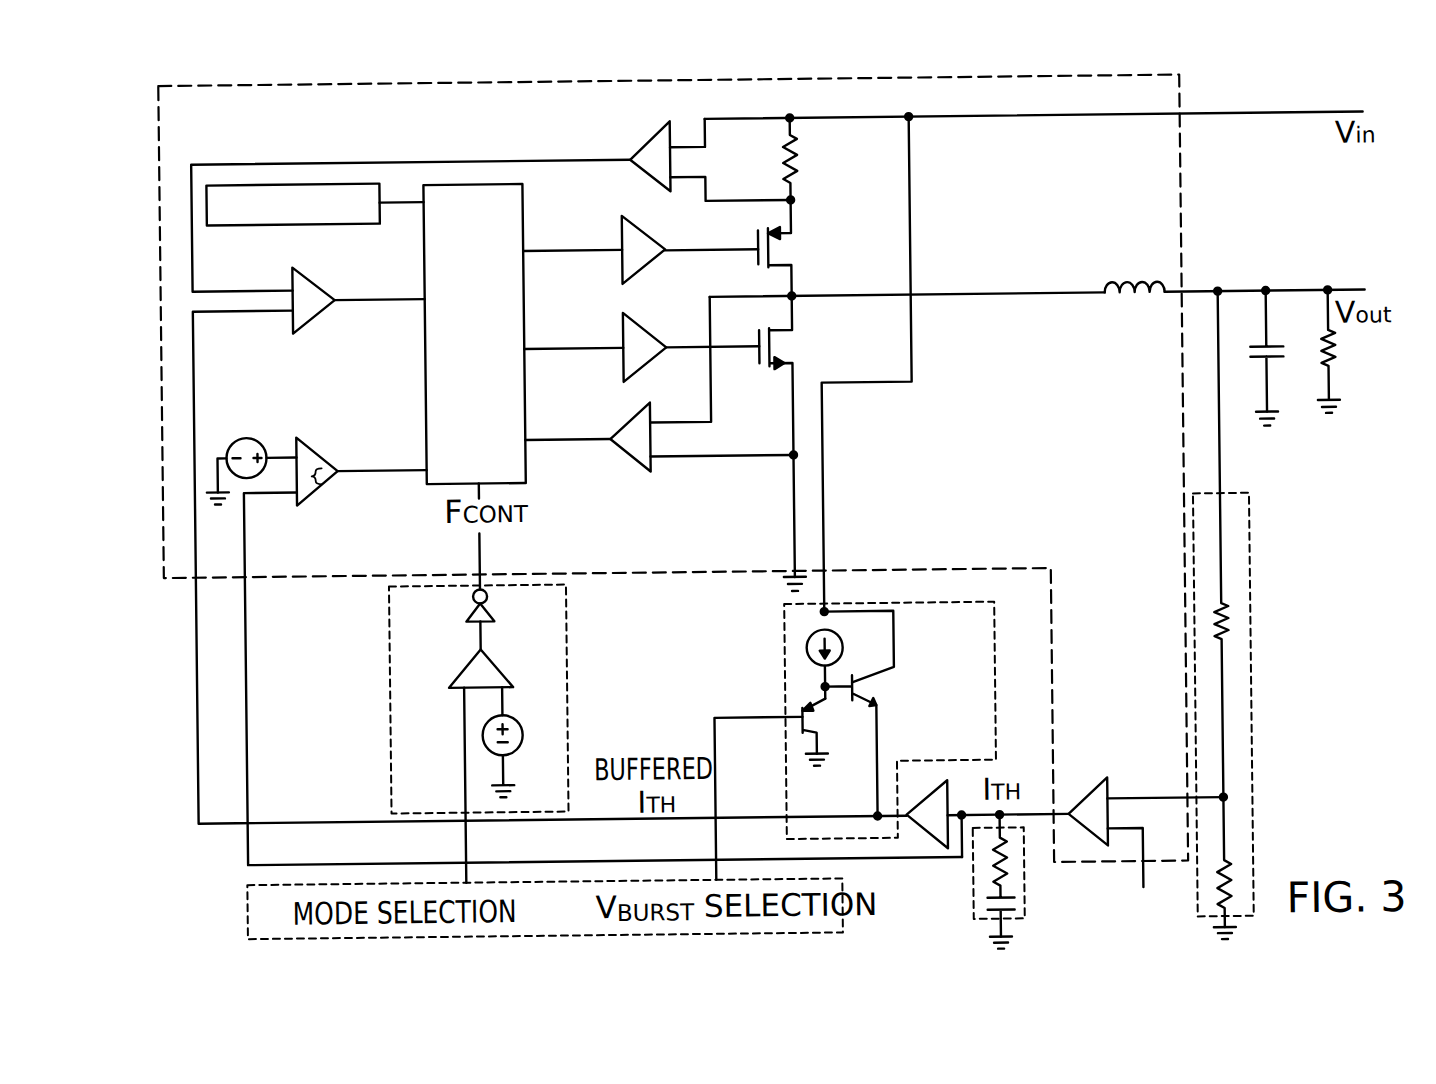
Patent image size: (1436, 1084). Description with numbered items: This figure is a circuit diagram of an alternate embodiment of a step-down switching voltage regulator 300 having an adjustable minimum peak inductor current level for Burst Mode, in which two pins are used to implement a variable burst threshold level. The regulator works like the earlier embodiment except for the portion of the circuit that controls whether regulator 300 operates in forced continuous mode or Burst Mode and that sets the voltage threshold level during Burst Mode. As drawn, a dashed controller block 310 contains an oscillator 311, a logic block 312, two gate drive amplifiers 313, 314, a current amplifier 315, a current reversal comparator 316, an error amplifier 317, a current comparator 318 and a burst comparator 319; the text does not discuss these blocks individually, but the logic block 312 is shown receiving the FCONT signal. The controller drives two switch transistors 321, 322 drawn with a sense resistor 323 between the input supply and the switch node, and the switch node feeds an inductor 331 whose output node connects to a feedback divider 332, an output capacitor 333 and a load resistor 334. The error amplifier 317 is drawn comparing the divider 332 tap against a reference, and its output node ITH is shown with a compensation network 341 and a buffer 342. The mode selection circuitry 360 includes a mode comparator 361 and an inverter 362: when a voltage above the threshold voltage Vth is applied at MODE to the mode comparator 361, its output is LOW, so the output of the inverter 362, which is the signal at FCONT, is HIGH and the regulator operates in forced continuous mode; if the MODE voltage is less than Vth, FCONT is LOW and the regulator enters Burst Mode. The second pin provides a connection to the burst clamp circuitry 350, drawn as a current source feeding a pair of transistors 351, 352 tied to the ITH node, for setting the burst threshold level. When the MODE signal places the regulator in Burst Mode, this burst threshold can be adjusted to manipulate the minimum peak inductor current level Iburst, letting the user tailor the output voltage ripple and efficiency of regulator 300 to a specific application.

The regulator 300 is at (1357, 791).
The controller integrated circuit 310 is at (1184, 220).
The oscillator 311 is at (270, 181).
The logic circuit 312 is at (456, 182).
The driver amplifier for switch 321 313 is at (643, 226).
The driver amplifier for switch 322 314 is at (628, 322).
The current amplifier 315 is at (644, 169).
The current reversal comparator 316 is at (628, 421).
The error amplifier 317 is at (1070, 823).
The current comparator 318 is at (339, 299).
The burst comparator 319 is at (319, 449).
The main switch transistor 321 is at (794, 249).
The synchronous switch transistor 322 is at (794, 349).
The current sense resistor 323 is at (804, 166).
The inductor 331 is at (1110, 276).
The feedback resistor divider 332 is at (1247, 626).
The output capacitor 333 is at (1272, 365).
The load resistor 334 is at (1334, 375).
The compensation network 341 is at (970, 905).
The buffer 342 is at (912, 826).
The burst clamp circuitry 350 is at (854, 692).
The transistor 351 is at (808, 715).
The transistor with current source 352 is at (850, 689).
The mode selection circuitry 360 is at (460, 734).
The mode comparator 361 is at (505, 676).
The inverter 362 is at (491, 617).